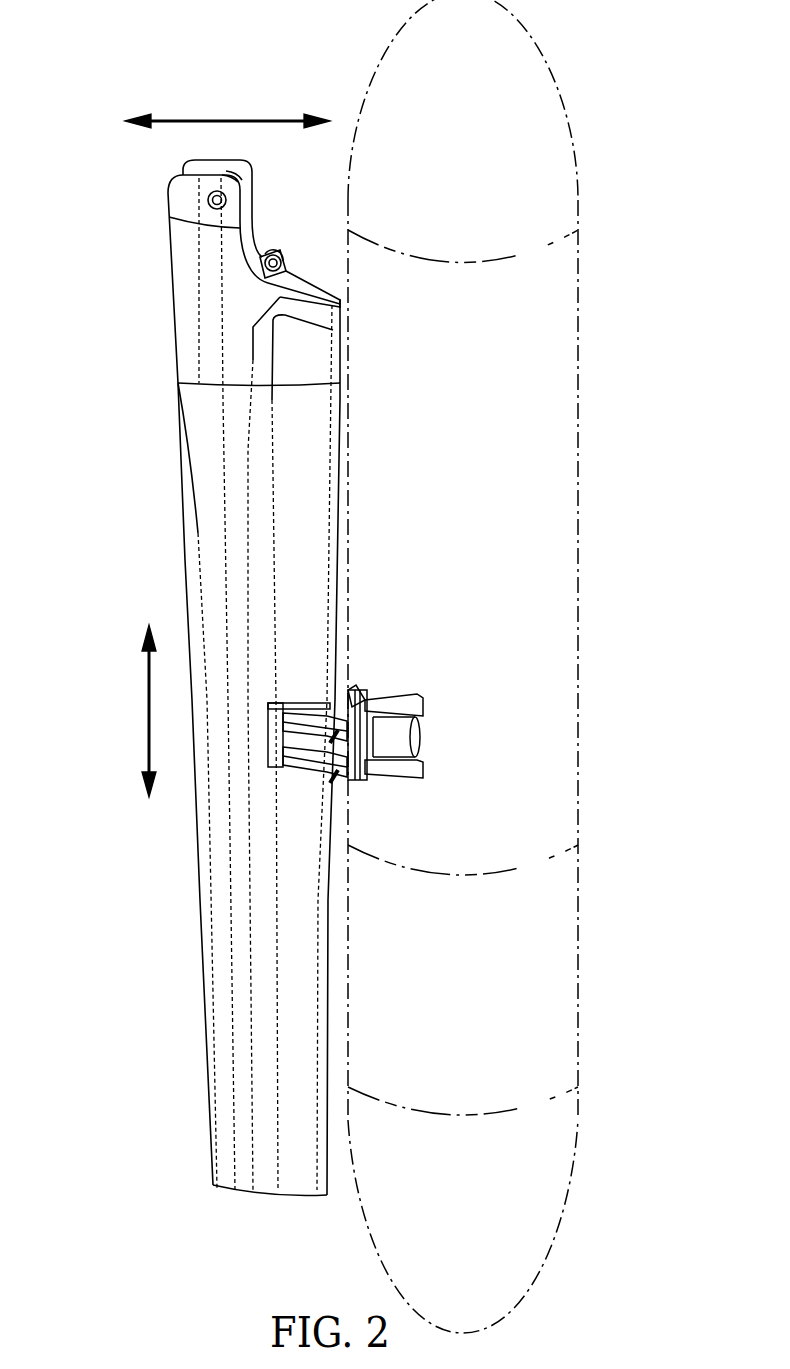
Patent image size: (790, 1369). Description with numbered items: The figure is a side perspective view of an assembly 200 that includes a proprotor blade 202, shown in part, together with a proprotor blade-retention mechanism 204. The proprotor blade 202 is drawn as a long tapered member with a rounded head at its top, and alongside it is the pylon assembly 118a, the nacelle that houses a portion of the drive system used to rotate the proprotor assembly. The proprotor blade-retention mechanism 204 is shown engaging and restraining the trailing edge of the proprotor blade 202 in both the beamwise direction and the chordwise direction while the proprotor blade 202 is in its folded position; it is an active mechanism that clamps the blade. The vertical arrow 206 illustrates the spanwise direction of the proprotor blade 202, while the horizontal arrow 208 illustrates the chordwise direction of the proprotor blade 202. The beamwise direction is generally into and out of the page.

The assembly 200 is at (125, 55).
The proprotor blade 202 is at (180, 472).
The proprotor blade-retention mechanism 204 is at (446, 742).
The arrow 206 is at (149, 712).
The arrow 208 is at (228, 119).
The pylon assembly 118a is at (580, 512).